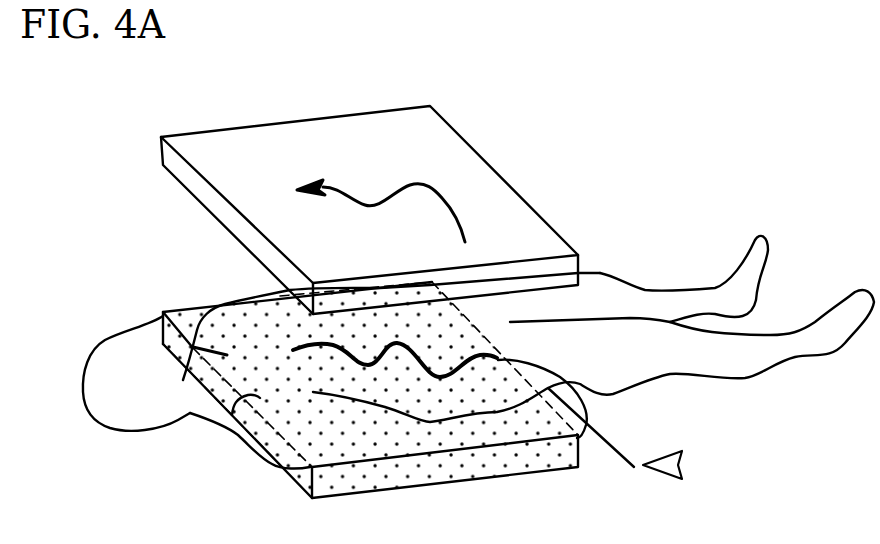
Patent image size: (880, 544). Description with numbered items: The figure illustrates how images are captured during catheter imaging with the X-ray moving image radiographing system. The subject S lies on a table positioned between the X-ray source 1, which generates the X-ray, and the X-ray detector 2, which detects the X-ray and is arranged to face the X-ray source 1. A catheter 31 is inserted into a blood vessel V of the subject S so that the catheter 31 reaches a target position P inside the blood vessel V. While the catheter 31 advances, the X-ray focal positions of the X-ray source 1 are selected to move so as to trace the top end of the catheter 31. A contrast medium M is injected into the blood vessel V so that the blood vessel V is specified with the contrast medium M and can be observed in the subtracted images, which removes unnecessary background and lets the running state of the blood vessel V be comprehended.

The X-ray source 1 is at (253, 137).
The X-ray detector 2 is at (357, 495).
The catheter 31 is at (612, 450).
The subject S is at (95, 370).
The blood vessel V is at (443, 378).
The target position P is at (498, 360).
The contrast medium M is at (681, 465).